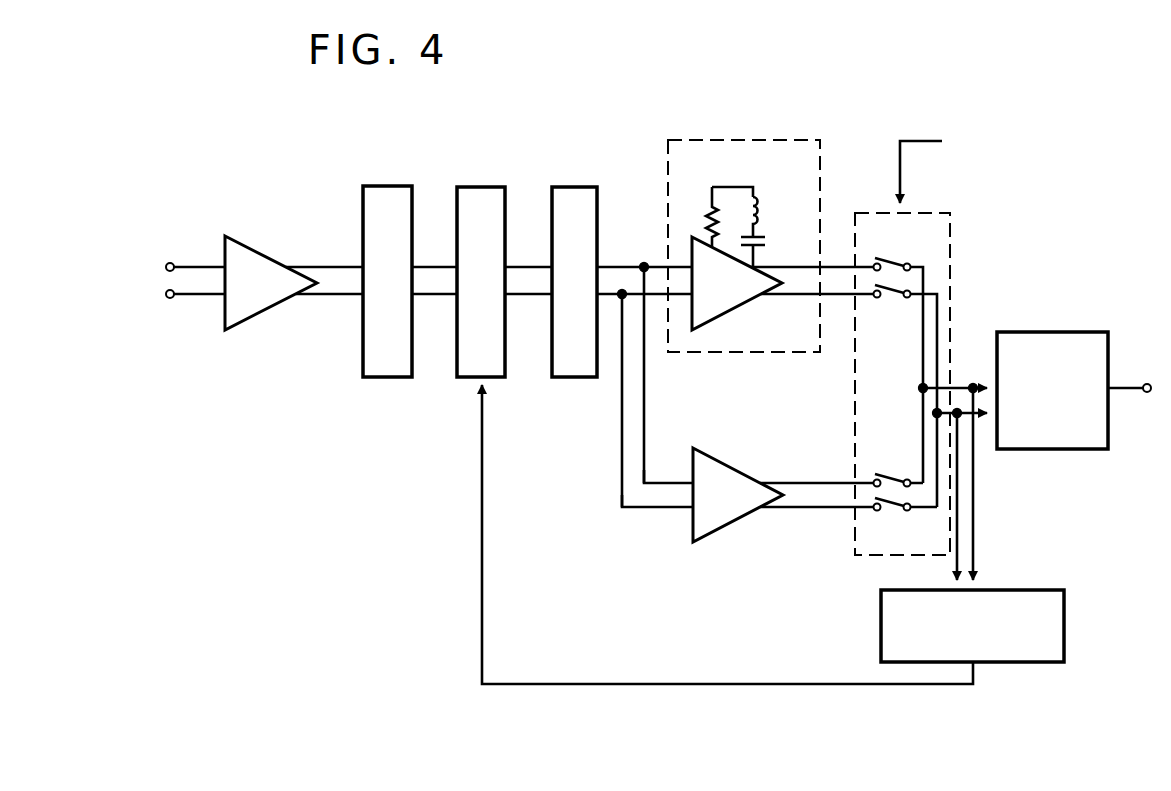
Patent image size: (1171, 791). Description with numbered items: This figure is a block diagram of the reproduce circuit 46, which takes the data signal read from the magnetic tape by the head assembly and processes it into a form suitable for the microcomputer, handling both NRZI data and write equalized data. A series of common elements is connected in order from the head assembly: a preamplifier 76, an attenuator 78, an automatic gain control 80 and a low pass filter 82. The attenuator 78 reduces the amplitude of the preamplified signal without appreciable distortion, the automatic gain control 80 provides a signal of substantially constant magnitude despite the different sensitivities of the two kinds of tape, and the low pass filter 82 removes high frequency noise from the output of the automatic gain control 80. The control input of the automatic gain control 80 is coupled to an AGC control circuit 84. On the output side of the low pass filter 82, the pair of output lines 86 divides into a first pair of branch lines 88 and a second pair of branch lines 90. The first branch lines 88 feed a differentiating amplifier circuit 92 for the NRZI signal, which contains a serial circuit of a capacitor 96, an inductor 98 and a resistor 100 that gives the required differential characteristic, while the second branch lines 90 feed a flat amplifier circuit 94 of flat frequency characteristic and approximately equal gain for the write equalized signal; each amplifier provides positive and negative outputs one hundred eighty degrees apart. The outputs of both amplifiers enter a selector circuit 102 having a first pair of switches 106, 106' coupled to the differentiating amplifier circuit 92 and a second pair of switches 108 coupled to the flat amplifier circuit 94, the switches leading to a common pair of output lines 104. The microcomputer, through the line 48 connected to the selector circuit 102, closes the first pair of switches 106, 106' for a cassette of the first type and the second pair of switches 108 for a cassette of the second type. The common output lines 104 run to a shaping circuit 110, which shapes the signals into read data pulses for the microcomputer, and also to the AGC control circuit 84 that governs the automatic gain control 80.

The reproduce circuit 46 is at (588, 112).
The line 48 is at (897, 172).
The preamplifier 76 is at (278, 262).
The attenuator 78 is at (384, 186).
The automatic gain control 80 is at (479, 187).
The low pass filter 82 is at (571, 187).
The AGC control circuit 84 is at (1015, 590).
The output lines 86 is at (609, 292).
The first pair of branch lines 88 is at (650, 292).
The second pair of branch lines 90 is at (642, 468).
The differentiating amplifier circuit 92 is at (743, 140).
The flat amplifier circuit 94 is at (746, 470).
The capacitor 96 is at (763, 242).
The inductor 98 is at (758, 205).
The resistor 100 is at (710, 213).
The selector circuit 102 is at (928, 212).
The common pair of output lines 104 is at (963, 409).
The first selector switch 106 is at (896, 247).
The first selector switch 106' is at (893, 315).
The second selector switch 108 is at (893, 473).
The shaping circuit 110 is at (1048, 332).